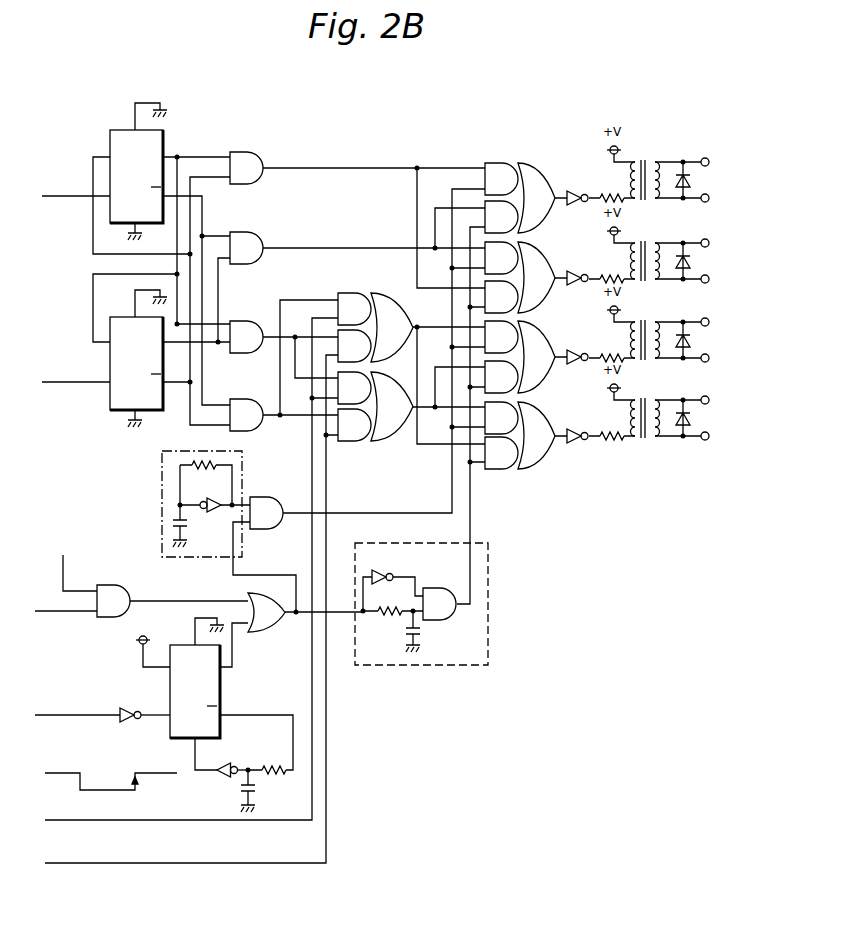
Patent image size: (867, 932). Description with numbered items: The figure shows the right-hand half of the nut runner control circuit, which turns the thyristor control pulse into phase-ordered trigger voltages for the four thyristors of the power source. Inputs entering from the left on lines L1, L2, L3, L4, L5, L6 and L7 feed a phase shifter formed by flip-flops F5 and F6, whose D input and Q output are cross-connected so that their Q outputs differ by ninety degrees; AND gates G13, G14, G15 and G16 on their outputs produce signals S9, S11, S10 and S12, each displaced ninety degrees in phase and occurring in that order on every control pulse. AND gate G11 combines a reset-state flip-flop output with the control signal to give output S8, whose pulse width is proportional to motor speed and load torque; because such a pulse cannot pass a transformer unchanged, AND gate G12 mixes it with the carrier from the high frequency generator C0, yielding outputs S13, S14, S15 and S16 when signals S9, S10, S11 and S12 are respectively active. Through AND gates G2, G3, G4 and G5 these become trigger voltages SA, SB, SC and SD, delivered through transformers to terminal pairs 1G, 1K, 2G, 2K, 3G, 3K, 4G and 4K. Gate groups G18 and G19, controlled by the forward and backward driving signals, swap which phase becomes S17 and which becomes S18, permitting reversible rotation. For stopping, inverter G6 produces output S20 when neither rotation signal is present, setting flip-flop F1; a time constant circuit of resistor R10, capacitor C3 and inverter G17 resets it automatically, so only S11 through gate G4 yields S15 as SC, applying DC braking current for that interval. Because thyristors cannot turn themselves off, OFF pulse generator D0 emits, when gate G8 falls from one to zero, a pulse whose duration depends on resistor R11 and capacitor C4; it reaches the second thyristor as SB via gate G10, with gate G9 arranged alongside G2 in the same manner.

The flip-flop F1 is at (197, 694).
The flip-flop F5 is at (138, 171).
The flip-flop F6 is at (138, 358).
The AND gate G2 is at (501, 179).
The AND gate G3 is at (501, 258).
The AND gate G4 is at (501, 337).
The AND gate G5 is at (501, 418).
The inverter G6 is at (128, 707).
The gate G8 is at (266, 612).
The AND gate G9 is at (501, 217).
The gate G10 is at (501, 297).
The AND gate G11 is at (113, 601).
The AND gate G12 is at (266, 513).
The AND gate G13 is at (246, 168).
The AND gate G14 is at (246, 248).
The AND gate G15 is at (246, 337).
The AND gate G16 is at (246, 415).
The inverter G17 is at (226, 776).
The AND/OR gate G18 is at (355, 292).
The AND/OR gate G19 is at (352, 445).
The resistor R10 is at (256, 744).
The resistor R11 is at (392, 604).
The capacitor C3 is at (257, 791).
The capacitor C4 is at (423, 640).
The high frequency generator C0 is at (162, 495).
The OFF pulse generator D0 is at (439, 604).
The gate output S8 is at (156, 599).
The signal S9 is at (402, 166).
The signal S10 is at (392, 247).
The signal S11 is at (420, 323).
The signal S12 is at (434, 412).
The output S13 is at (526, 184).
The output S14 is at (526, 264).
The output S15 is at (526, 343).
The output S16 is at (521, 422).
The signal S17 is at (290, 334).
The signal S18 is at (289, 418).
The inverter output S20 is at (153, 731).
The trigger voltage SA is at (563, 203).
The trigger voltage SB is at (566, 283).
The trigger voltage SC is at (563, 362).
The trigger voltage SD is at (560, 441).
The input line L1 is at (76, 186).
The input line L2 is at (76, 372).
The input line L3 is at (80, 572).
The input line L4 is at (66, 601).
The input line L5 is at (77, 704).
The input line L6 is at (191, 569).
The input line L7 is at (191, 609).
The terminal 1G is at (722, 163).
The terminal 1K is at (722, 199).
The terminal 2G is at (722, 244).
The terminal 2K is at (722, 280).
The terminal 3G is at (722, 323).
The terminal 3K is at (722, 359).
The terminal 4G is at (722, 401).
The terminal 4K is at (722, 437).